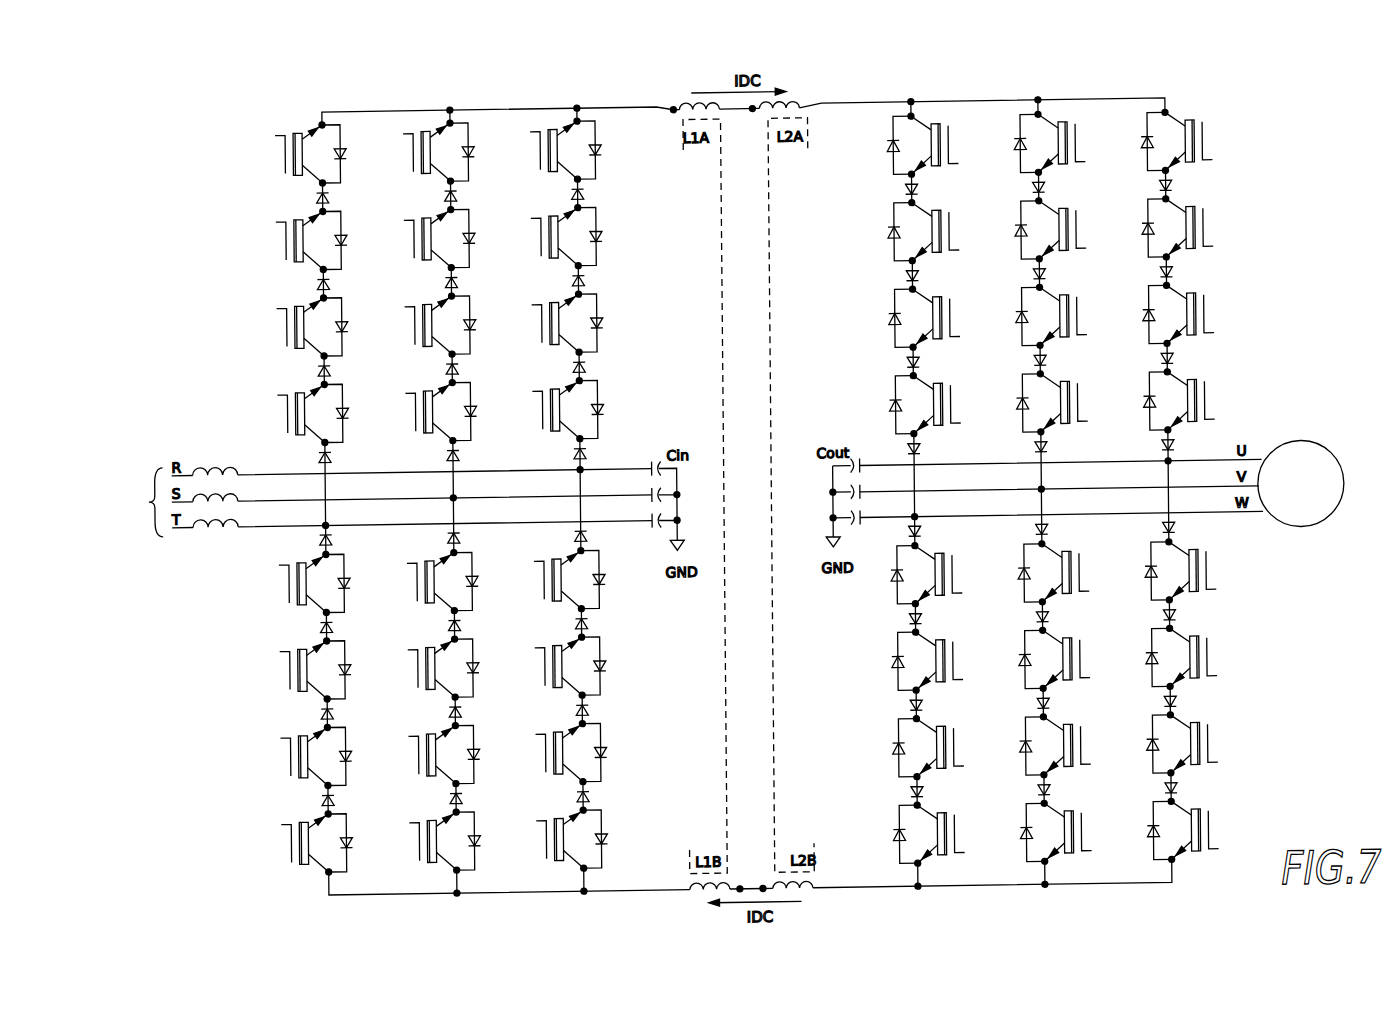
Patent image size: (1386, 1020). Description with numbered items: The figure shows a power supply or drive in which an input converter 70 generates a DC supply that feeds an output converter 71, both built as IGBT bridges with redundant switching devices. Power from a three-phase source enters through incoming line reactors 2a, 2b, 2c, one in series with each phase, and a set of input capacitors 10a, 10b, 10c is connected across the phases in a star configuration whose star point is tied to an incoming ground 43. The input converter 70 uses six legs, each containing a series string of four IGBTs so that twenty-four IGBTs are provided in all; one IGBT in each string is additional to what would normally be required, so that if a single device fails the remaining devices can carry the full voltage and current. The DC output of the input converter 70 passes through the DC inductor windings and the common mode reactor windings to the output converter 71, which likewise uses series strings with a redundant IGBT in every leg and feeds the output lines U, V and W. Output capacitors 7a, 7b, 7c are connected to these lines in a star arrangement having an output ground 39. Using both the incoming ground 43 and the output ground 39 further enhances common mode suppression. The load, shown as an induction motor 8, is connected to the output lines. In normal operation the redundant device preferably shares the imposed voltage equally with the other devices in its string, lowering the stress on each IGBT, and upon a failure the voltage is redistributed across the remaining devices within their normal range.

The input converter 70 is at (580, 102).
The output converter 71 is at (1154, 100).
The incoming line reactor 2a is at (237, 466).
The incoming line reactor 2b is at (237, 492).
The incoming line reactor 2c is at (237, 518).
The input capacitor 10a is at (651, 462).
The input capacitor 10b is at (651, 488).
The input capacitor 10c is at (651, 514).
The incoming ground 43 is at (681, 539).
The output capacitor 7a is at (862, 463).
The output capacitor 7b is at (862, 489).
The output capacitor 7c is at (862, 515).
The output ground 39 is at (831, 538).
The induction motor 8 is at (1300, 536).